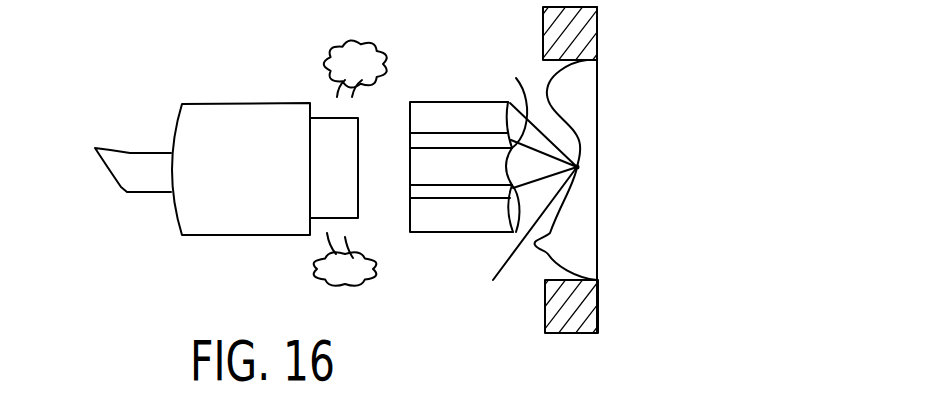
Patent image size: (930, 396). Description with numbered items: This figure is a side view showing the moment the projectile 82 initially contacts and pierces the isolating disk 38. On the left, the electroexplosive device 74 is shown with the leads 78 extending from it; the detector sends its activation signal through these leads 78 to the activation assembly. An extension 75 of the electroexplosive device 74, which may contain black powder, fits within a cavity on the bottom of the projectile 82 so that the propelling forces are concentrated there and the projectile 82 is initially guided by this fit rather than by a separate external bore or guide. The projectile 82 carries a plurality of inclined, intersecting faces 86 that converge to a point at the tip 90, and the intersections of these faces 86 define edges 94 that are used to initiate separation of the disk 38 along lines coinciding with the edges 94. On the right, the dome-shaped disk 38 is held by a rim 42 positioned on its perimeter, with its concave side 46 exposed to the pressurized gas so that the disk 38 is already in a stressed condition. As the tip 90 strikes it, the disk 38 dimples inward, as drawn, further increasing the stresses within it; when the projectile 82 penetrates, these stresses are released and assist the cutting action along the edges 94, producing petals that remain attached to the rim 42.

The electroexplosive device 74 is at (199, 103).
The extension of the electroexplosive device 75 is at (323, 117).
The leads 78 is at (115, 165).
The projectile 82 is at (458, 101).
The inclined intersecting faces 86 is at (516, 78).
The tip 90 is at (580, 165).
The disk 38 is at (557, 80).
The concave side 46 is at (540, 245).
The rim 42 is at (570, 333).
The edges 94 is at (518, 235).